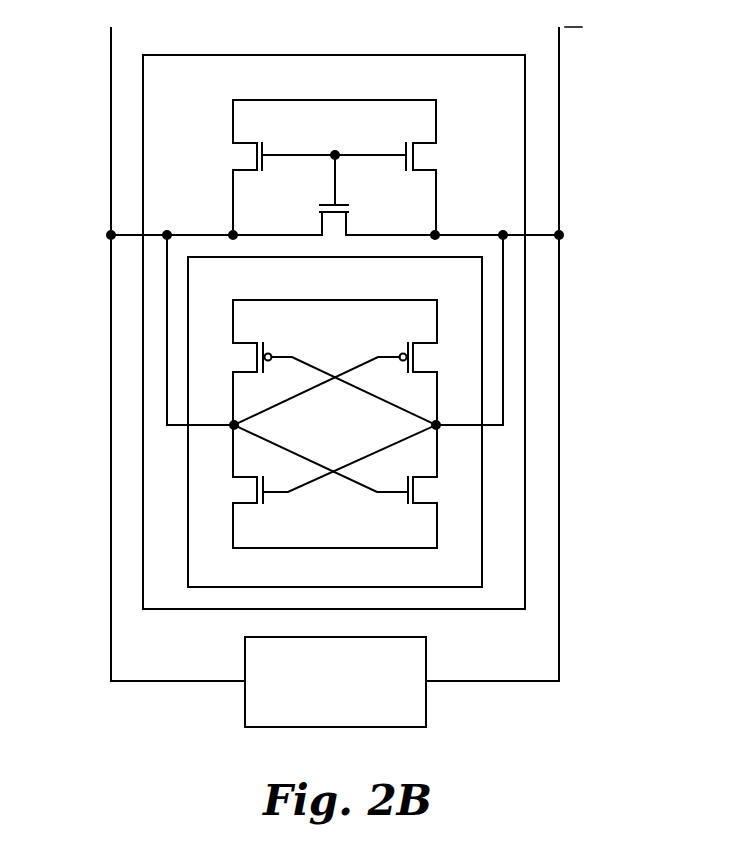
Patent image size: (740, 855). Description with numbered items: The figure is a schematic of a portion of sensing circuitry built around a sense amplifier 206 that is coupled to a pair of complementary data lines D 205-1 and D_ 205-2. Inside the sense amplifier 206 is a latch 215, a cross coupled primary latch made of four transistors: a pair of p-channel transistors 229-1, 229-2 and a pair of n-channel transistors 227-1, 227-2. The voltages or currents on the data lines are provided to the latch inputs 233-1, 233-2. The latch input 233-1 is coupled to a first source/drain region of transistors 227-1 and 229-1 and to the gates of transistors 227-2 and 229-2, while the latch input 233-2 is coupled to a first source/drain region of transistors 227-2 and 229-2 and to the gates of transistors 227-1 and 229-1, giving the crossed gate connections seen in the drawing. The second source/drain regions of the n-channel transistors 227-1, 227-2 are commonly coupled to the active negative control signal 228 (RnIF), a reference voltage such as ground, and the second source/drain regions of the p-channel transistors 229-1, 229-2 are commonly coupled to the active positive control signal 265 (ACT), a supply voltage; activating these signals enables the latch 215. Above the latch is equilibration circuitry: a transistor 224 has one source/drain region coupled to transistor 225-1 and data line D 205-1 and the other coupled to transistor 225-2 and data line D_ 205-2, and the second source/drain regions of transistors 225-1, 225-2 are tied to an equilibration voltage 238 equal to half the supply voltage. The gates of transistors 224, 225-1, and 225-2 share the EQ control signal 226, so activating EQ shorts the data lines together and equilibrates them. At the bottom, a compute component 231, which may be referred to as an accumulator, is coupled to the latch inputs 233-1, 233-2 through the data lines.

The data line D 205-1 is at (111, 95).
The data line D_ 205-2 is at (559, 95).
The sense amplifier 206 is at (237, 55).
The equilibration voltage 238 is at (400, 100).
The transistor 225-1 is at (243, 157).
The transistor 225-2 is at (428, 157).
The EQ control signal line 226 is at (305, 157).
The transistor 224 is at (347, 224).
The latch 215 is at (188, 508).
The cross coupled latch 265 is at (293, 300).
The p-channel transistor 229-1 is at (247, 352).
The p-channel transistor 229-2 is at (423, 352).
The n-channel transistor 227-1 is at (247, 507).
The n-channel transistor 227-2 is at (422, 507).
The latch input 233-1 is at (252, 427).
The latch input 233-2 is at (418, 425).
The active negative control signal 228 is at (381, 548).
The compute component 231 is at (258, 703).